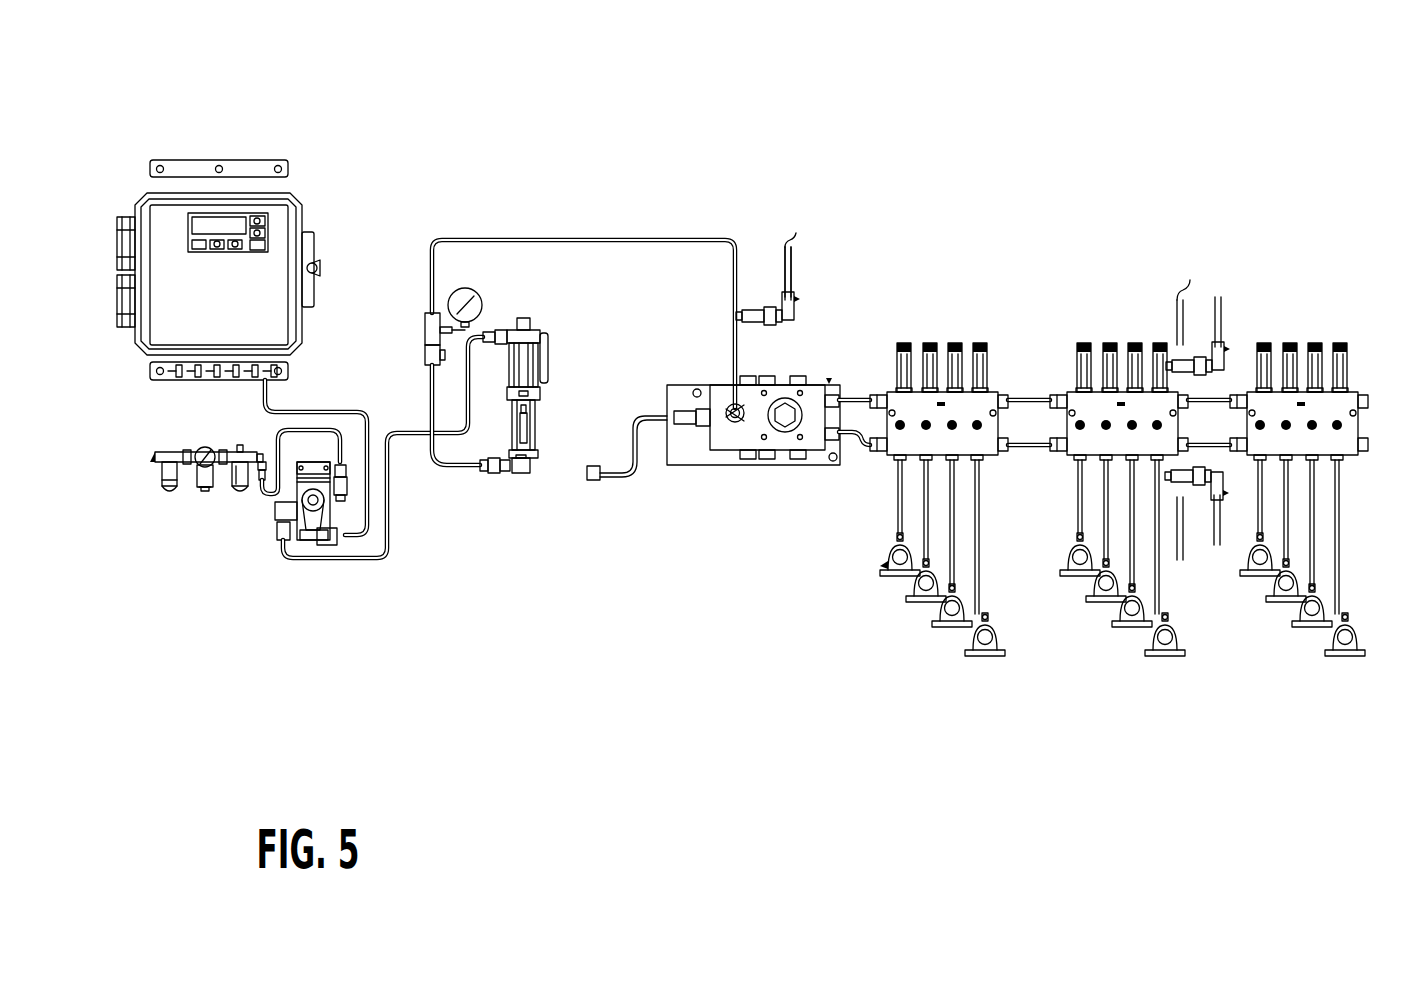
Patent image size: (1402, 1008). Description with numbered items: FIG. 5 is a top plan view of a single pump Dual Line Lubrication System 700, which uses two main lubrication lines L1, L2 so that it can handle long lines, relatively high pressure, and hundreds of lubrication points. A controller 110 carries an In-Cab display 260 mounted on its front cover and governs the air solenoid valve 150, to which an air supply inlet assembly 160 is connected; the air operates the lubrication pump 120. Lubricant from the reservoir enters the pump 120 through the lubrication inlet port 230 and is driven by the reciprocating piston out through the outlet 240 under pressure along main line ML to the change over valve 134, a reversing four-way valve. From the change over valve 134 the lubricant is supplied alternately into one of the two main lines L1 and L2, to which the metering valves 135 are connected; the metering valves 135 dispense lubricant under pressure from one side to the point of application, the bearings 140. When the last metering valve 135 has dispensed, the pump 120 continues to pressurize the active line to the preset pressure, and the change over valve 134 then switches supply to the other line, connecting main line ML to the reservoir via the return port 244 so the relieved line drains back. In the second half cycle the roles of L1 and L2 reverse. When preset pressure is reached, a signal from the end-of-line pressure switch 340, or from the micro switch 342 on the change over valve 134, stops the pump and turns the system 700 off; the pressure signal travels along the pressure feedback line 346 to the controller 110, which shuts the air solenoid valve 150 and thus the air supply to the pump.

The controller 110 is at (213, 148).
The In-Cab display 260 is at (228, 230).
The air supply inlet assembly 160 is at (183, 507).
The air solenoid valve 150 is at (317, 480).
The lubrication pump 120 is at (523, 357).
The outlet 240 is at (483, 475).
The lubrication inlet port 230 is at (522, 475).
The return port 244 is at (590, 483).
The change over valve 134 is at (697, 466).
The micro switch 342 is at (787, 422).
The end-of-line pressure switch 340 is at (793, 305).
The pressure feedback line 346 is at (796, 233).
The Dual Line Lubrication System 700 is at (675, 190).
The metering valve 135 is at (892, 397).
The bearing 140 is at (1350, 655).
The main line ML is at (614, 240).
The first main lubrication line L1 is at (857, 395).
The second main lubrication line L2 is at (852, 457).